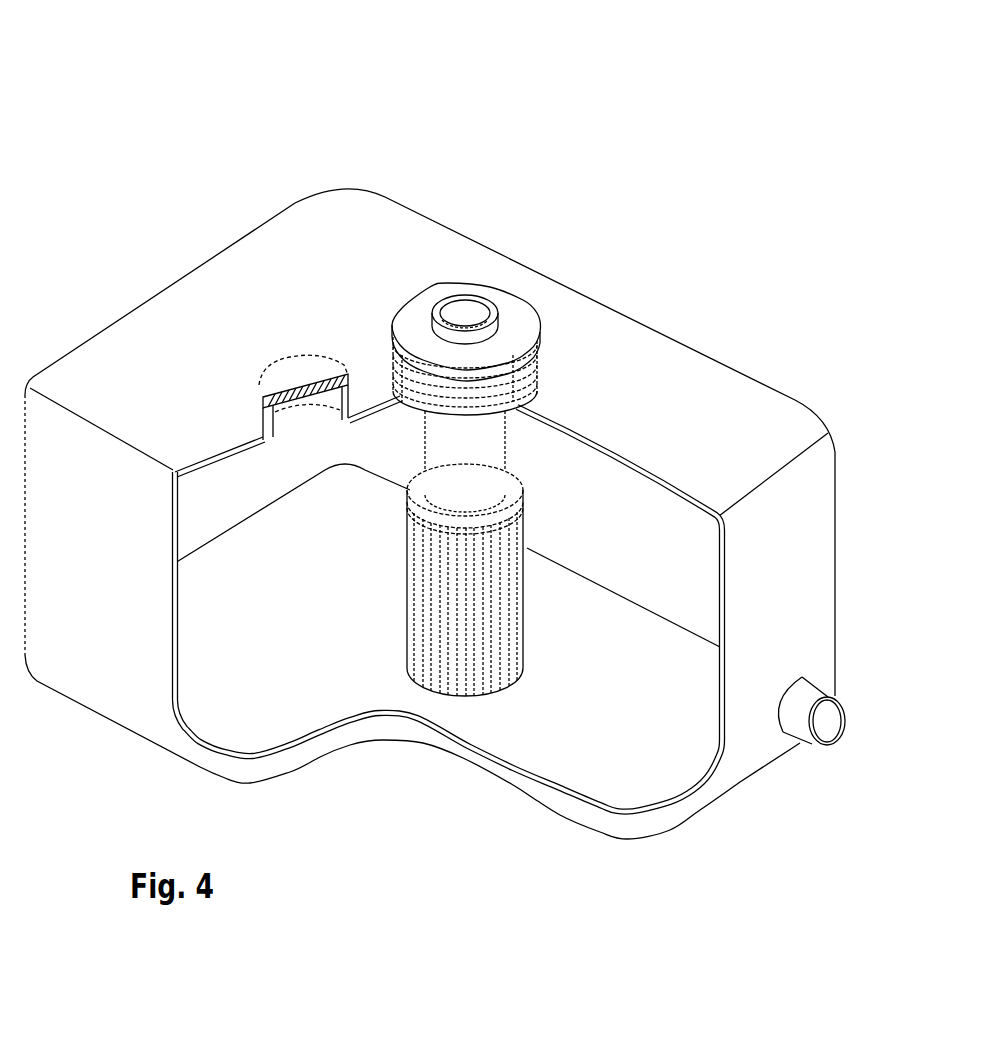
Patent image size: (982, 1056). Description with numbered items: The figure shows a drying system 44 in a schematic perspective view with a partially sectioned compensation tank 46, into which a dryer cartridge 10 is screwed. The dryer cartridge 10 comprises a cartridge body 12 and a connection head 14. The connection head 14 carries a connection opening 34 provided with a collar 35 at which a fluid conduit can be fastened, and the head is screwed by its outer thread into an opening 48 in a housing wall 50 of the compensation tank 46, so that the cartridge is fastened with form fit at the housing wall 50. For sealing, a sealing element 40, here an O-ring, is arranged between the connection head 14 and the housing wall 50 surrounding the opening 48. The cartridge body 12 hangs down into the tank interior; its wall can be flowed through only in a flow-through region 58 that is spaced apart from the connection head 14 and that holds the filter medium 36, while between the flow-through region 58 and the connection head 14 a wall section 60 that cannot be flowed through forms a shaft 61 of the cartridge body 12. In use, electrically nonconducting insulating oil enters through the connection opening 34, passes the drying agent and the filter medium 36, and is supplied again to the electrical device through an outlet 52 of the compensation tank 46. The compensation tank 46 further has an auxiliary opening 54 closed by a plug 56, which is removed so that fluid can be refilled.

The drying system 44 is at (217, 100).
The compensation tank 46 is at (223, 278).
The connection head 14 is at (414, 330).
The connection opening 34 is at (463, 307).
The collar 35 is at (497, 318).
The sealing element 40 is at (435, 373).
The opening 48 is at (473, 383).
The plug 56 is at (290, 378).
The auxiliary opening 54 is at (303, 421).
The shaft 61 is at (433, 443).
The wall section 60 is at (513, 452).
The housing wall 50 is at (632, 463).
The dryer cartridge 10 is at (574, 524).
The cartridge body 12 is at (380, 537).
The flow-through region 58 is at (533, 587).
The filter medium 36 is at (422, 625).
The outlet 52 is at (820, 726).